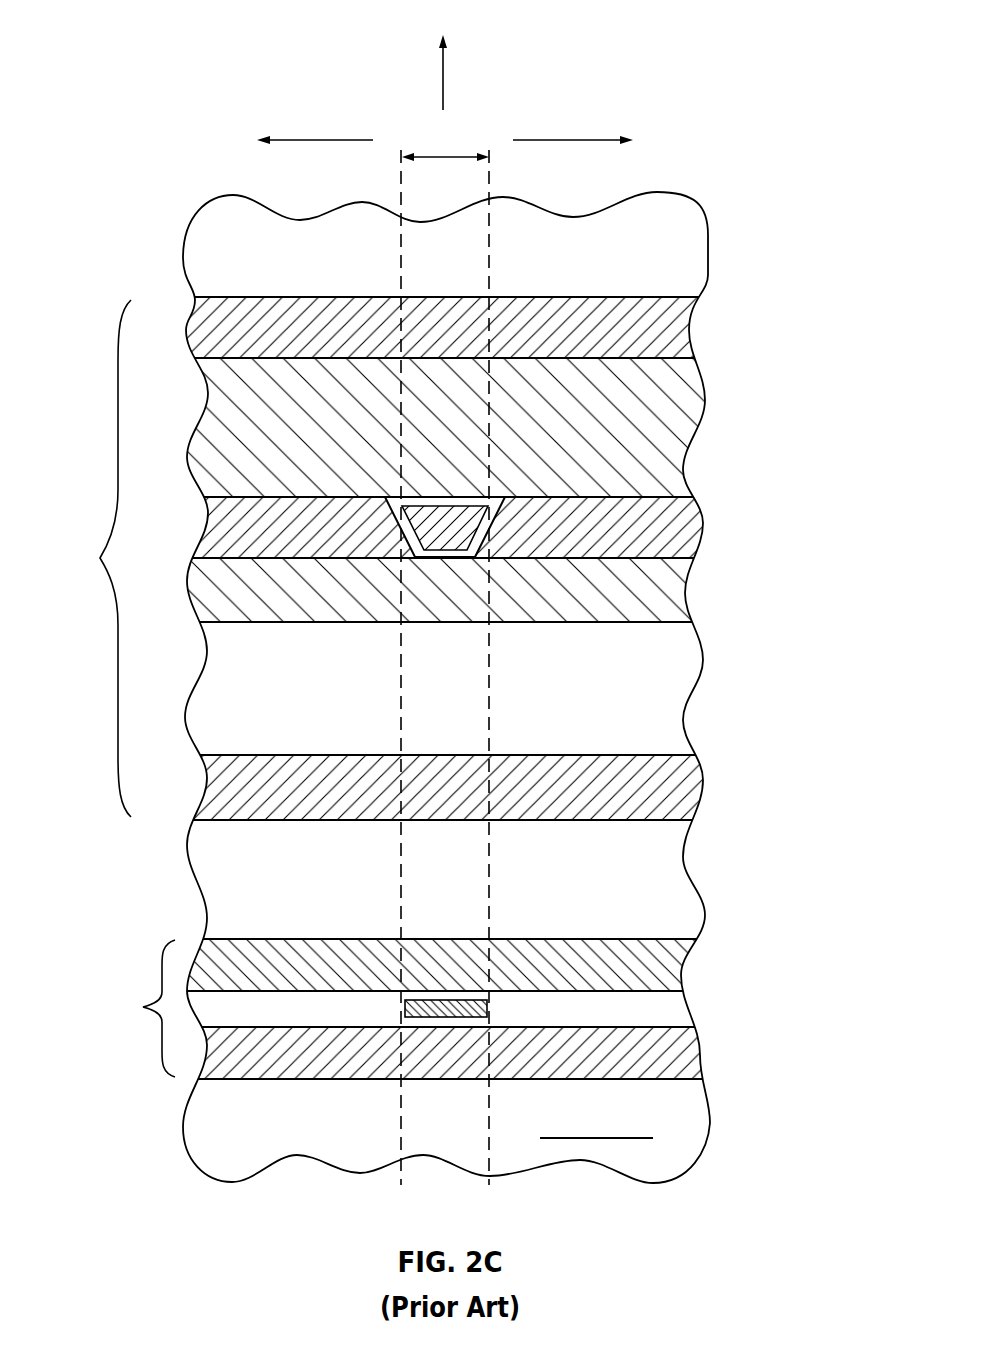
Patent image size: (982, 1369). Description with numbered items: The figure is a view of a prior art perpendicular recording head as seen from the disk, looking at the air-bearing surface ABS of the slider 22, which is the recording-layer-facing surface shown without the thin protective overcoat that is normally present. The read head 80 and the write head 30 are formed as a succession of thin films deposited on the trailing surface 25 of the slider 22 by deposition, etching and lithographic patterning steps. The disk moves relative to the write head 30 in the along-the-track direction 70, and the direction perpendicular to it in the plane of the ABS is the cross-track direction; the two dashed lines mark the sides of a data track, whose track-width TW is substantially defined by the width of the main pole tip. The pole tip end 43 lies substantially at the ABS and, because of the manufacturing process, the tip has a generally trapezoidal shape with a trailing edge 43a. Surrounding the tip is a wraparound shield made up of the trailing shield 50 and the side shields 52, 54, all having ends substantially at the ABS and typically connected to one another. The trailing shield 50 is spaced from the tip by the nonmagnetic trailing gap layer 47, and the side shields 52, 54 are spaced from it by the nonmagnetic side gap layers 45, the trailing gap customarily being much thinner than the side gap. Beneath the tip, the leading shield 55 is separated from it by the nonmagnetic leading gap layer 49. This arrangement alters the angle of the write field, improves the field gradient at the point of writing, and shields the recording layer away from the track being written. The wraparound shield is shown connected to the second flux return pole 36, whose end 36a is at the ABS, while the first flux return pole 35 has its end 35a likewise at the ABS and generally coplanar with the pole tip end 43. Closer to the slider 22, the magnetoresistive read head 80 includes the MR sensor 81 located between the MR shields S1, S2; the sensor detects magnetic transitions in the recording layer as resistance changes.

The slider 22 is at (233, 1182).
The trailing surface 25 is at (558, 1078).
The write head 30 is at (97, 558).
The first flux return pole 35 is at (695, 815).
The end of first return pole 35a is at (692, 763).
The second flux return pole 36 is at (690, 357).
The end of second return pole 36a is at (678, 328).
The pole tip end 43 is at (425, 517).
The trailing edge 43a is at (475, 503).
The side gap layers 45 is at (397, 515).
The trailing gap layer 47 is at (437, 500).
The leading gap layer 49 is at (450, 555).
The trailing shield 50 is at (700, 415).
The side shield 52 is at (695, 508).
The side shield 54 is at (208, 516).
The leading shield 55 is at (680, 593).
The along-the-track direction 70 is at (443, 86).
The magnetoresistive read head 80 is at (143, 1008).
The MR sensor 81 is at (440, 1000).
The MR shield S1 is at (693, 1055).
The MR shield S2 is at (683, 968).
The air-bearing surface ABS is at (692, 665).
The track-width TW is at (445, 151).